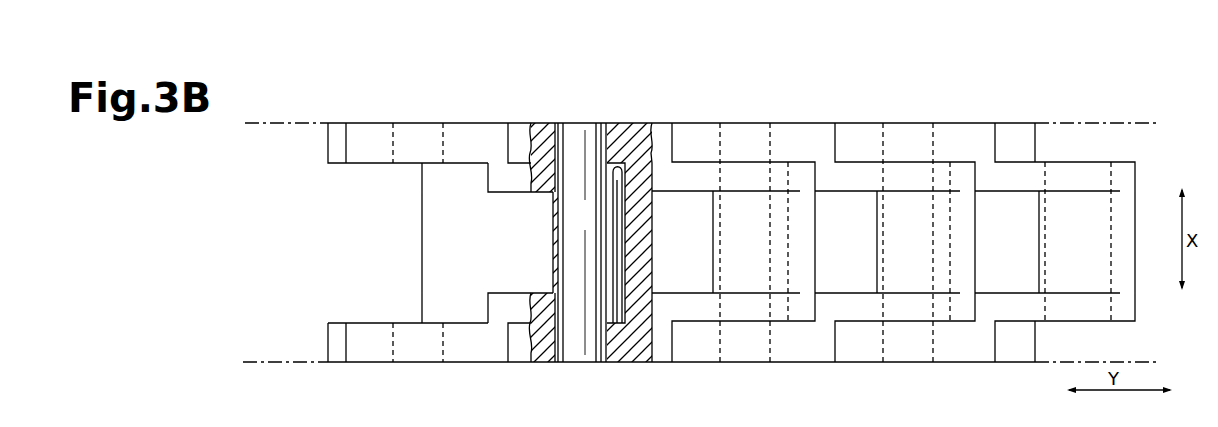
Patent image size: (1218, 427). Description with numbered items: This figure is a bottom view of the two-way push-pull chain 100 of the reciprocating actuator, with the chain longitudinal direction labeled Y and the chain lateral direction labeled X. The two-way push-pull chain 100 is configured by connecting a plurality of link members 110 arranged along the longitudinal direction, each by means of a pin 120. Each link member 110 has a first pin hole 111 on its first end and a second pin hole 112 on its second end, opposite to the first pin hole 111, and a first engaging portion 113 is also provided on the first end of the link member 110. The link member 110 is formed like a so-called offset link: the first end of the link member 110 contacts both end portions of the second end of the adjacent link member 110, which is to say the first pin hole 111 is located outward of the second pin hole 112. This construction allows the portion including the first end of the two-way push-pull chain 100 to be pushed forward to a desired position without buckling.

The two-way push-pull chain 100 is at (727, 191).
The link member 110 is at (727, 218).
The first pin hole 111 is at (393, 141).
The second pin hole 112 is at (619, 150).
The first engaging portion 113 is at (336, 143).
The pin 120 is at (677, 216).